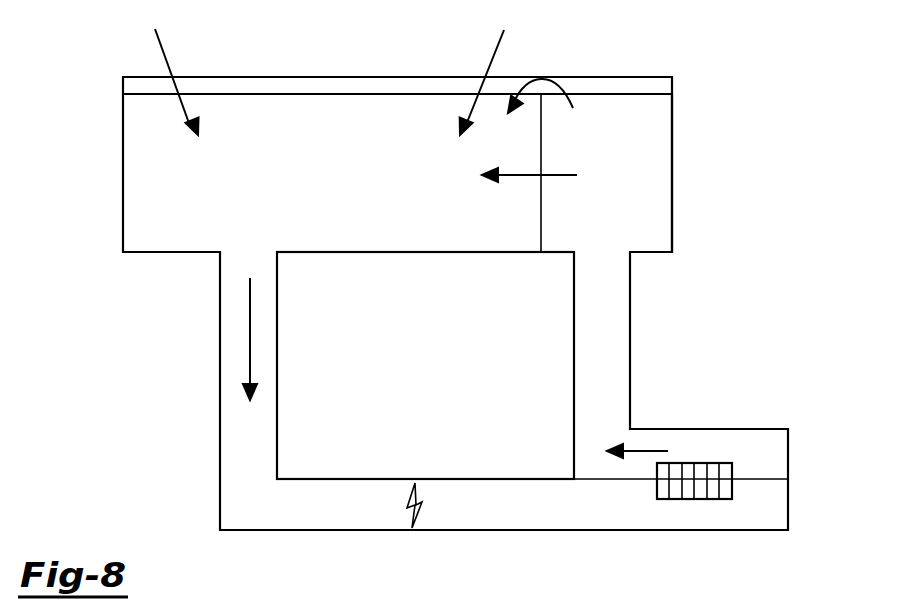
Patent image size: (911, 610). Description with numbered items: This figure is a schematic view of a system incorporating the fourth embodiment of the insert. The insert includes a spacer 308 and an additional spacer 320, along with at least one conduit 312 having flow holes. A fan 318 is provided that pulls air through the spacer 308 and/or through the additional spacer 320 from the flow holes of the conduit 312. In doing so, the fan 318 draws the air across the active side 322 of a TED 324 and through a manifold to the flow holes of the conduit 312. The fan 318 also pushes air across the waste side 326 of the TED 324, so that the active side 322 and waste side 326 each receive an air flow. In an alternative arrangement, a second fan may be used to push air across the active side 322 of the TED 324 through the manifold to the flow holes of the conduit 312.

The spacer 308 is at (128, 155).
The conduit 312 is at (670, 153).
The fan 318 is at (413, 528).
The additional spacer 320 is at (128, 87).
The active side 322 is at (683, 463).
The TED 324 is at (713, 463).
The waste side 326 is at (693, 480).